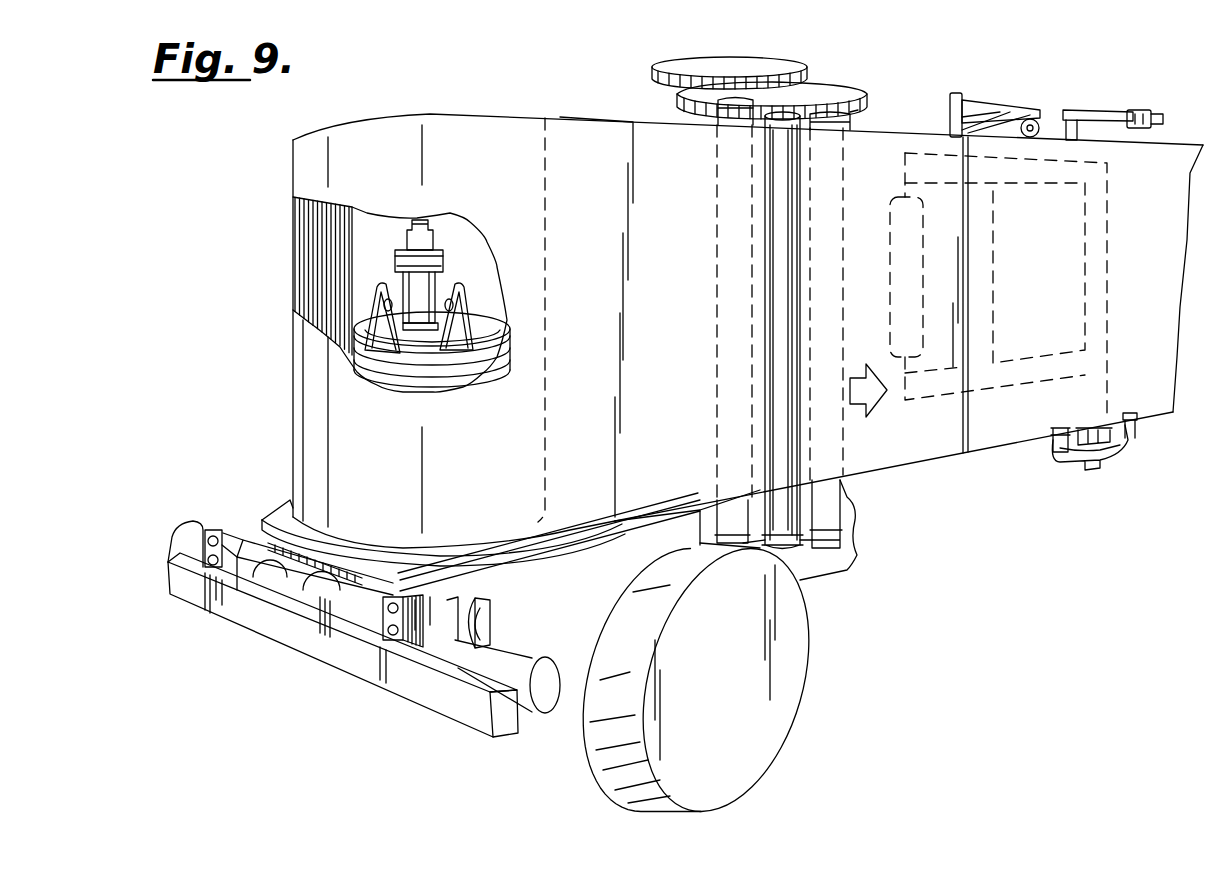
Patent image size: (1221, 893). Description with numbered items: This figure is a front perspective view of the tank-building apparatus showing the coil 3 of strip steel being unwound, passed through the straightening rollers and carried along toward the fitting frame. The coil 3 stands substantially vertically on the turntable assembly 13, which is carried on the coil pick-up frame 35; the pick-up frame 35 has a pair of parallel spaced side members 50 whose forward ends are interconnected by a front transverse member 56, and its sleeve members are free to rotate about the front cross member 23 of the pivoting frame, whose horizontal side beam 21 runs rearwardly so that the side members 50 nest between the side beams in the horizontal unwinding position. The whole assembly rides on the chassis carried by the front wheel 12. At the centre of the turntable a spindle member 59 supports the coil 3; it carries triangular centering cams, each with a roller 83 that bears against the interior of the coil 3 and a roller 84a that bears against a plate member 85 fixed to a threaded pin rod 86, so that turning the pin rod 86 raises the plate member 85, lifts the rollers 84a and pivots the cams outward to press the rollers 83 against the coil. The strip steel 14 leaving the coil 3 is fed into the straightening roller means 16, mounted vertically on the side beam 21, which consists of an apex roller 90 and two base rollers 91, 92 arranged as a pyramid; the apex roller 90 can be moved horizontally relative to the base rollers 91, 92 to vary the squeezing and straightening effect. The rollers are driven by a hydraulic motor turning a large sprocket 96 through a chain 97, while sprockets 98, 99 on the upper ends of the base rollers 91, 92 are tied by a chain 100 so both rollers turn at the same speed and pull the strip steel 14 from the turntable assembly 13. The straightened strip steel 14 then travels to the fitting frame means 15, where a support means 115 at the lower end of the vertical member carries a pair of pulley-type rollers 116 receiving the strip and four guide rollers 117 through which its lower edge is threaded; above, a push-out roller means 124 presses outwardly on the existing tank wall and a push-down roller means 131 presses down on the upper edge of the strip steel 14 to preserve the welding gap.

The coil 3 is at (430, 120).
The front wheel 12 is at (790, 680).
The turntable assembly 13 is at (262, 495).
The strip steel 14 is at (586, 130).
The fitting frame means 15 is at (1062, 88).
The straightening roller means 16 is at (692, 52).
The horizontal side beam 21 is at (826, 572).
The front cross member 23 is at (536, 714).
The coil pick-up frame 35 is at (272, 598).
The side member 50 is at (540, 567).
The front transverse member 56 is at (408, 612).
The spindle member 59 is at (389, 252).
The roller 83 is at (386, 288).
The roller 84a is at (490, 320).
The plate member 85 is at (425, 332).
The threaded pin rod 86 is at (438, 252).
The apex roller 90 is at (775, 310).
The base roller 91 is at (715, 258).
The base roller 92 is at (832, 192).
The large sprocket 96 is at (810, 82).
The chain 97 is at (762, 60).
The sprocket 98 is at (700, 100).
The sprocket 99 is at (866, 114).
The chain 100 is at (856, 106).
The support means 115 is at (1105, 455).
The support pulley-type roller 116 is at (1075, 430).
The guide roller 117 is at (1050, 428).
The push-out roller means 124 is at (1142, 110).
The push-down roller means 131 is at (1000, 110).